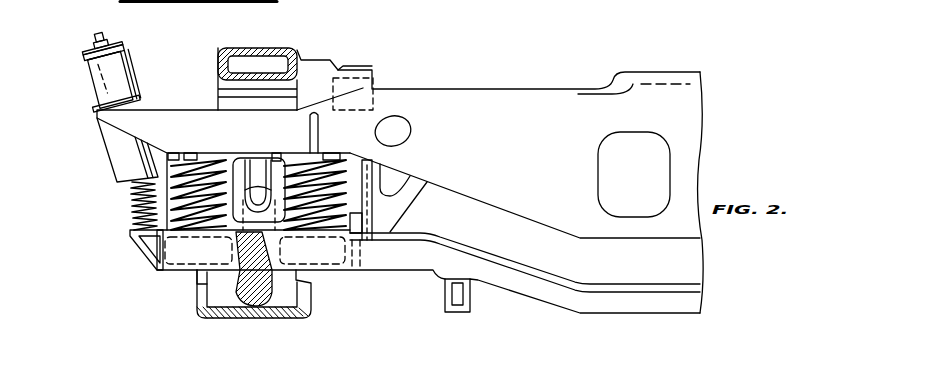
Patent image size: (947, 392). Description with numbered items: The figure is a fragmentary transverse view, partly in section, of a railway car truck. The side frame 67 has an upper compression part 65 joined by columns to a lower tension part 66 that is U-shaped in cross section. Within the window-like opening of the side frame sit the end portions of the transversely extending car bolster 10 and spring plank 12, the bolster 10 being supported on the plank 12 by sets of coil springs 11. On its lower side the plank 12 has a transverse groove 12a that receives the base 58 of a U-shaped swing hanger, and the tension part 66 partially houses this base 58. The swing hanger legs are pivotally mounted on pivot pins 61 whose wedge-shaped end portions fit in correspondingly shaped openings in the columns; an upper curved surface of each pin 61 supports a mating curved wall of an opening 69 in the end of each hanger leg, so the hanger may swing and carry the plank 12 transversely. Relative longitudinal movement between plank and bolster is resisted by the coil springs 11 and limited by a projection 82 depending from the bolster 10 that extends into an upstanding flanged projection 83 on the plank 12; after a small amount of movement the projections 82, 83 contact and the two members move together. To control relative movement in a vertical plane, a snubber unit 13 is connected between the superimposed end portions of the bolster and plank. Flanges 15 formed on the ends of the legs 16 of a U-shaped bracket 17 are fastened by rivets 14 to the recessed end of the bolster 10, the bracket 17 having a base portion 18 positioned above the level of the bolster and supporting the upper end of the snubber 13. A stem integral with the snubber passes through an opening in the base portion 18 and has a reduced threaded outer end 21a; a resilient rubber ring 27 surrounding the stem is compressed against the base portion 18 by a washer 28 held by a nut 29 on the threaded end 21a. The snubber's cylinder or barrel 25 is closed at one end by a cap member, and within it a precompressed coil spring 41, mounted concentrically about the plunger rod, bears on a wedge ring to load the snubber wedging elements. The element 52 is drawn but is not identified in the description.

The car bolster 10 is at (503, 93).
The coil springs 11 is at (185, 165).
The spring plank 12 is at (397, 270).
The transverse groove 12a is at (199, 283).
The snubber unit 13 is at (104, 143).
The rivets 14 is at (134, 100).
The flanges 15 is at (97, 110).
The legs 16 is at (131, 75).
The U-shaped bracket 17 is at (88, 85).
The base portion 18 is at (88, 63).
The reduced threaded outer end 21a is at (99, 40).
The cylinder or barrel 25 is at (118, 165).
The resilient ring 27 is at (120, 59).
The washer 28 is at (116, 48).
The nut 29 is at (94, 50).
The precompressed coil spring 41 is at (131, 203).
The wedge block 52 is at (131, 233).
The swing hanger base 58 is at (263, 306).
The pivot pins 61 is at (253, 192).
The upper compression part 65 is at (242, 48).
The lower tension part 66 is at (205, 312).
The side frame 67 is at (218, 48).
The opening 69 is at (221, 222).
The projection 82 is at (403, 209).
The upstanding flanged projection 83 is at (386, 237).